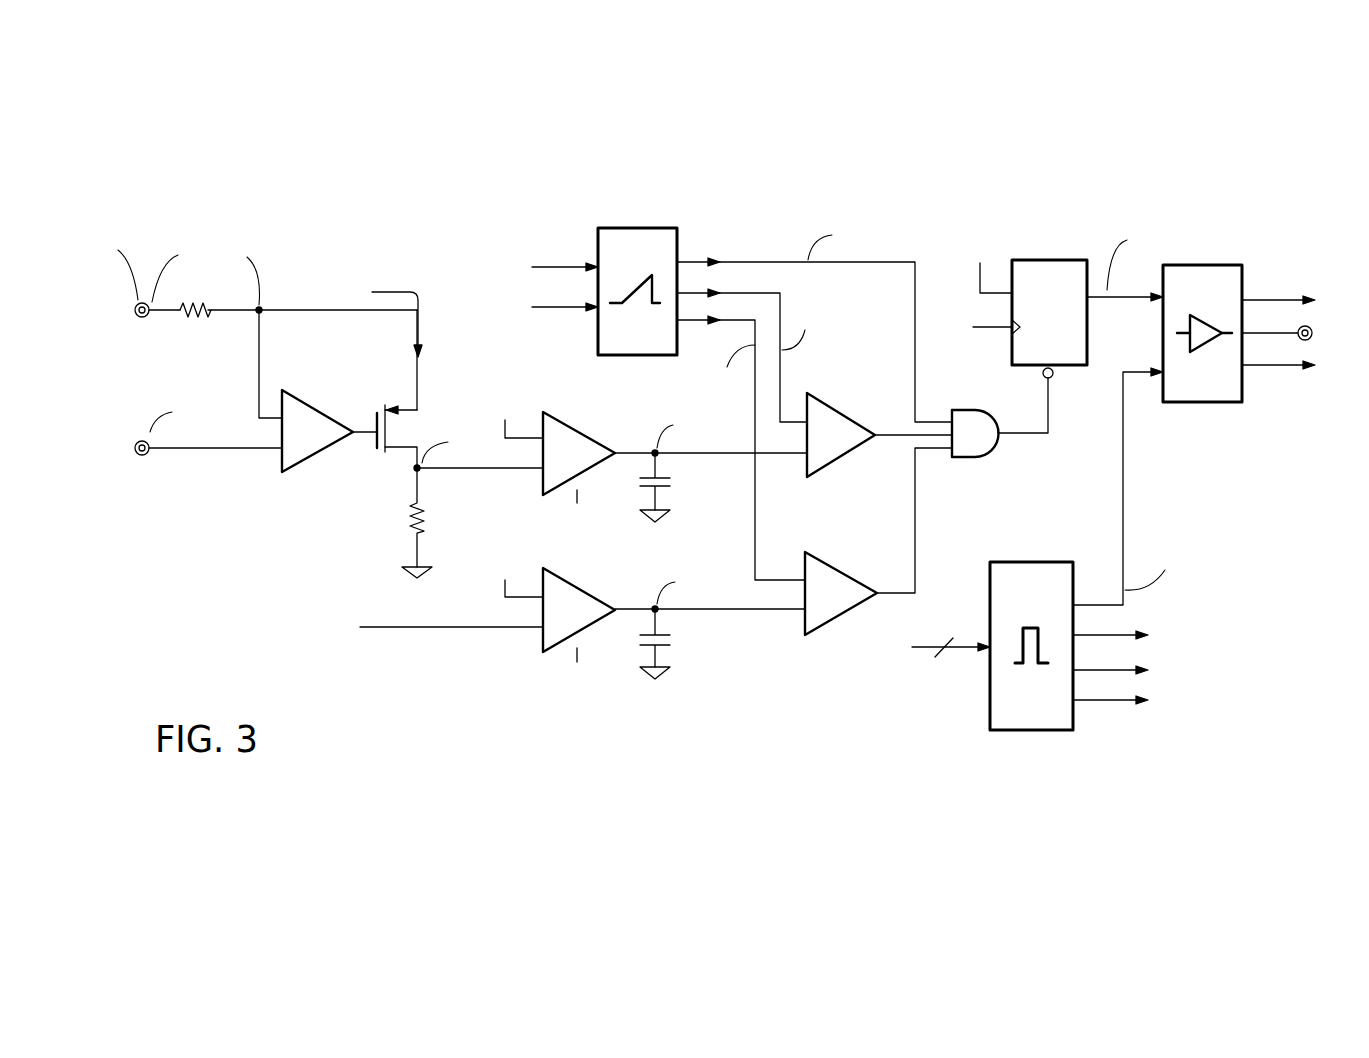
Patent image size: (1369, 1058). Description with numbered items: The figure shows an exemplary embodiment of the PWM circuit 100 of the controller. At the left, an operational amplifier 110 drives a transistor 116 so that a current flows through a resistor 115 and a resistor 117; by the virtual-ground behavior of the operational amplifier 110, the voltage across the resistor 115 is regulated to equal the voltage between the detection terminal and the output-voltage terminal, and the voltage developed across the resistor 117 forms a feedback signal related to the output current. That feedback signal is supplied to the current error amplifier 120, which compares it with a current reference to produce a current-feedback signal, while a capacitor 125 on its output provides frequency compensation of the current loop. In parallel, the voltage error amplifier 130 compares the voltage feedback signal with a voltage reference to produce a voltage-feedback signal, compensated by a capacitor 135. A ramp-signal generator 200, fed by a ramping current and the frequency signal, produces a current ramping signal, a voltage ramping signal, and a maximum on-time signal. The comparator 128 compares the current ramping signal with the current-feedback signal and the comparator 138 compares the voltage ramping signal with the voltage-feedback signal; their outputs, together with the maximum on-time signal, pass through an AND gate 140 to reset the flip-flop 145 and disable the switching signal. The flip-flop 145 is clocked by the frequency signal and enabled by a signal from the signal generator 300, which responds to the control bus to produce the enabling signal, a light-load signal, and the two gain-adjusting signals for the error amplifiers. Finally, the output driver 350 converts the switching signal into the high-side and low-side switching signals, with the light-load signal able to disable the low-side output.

The PWM circuit 100 is at (1226, 183).
The operational amplifier 110 is at (318, 403).
The resistor 115 is at (193, 327).
The transistor 116 is at (383, 457).
The resistor 117 is at (400, 512).
The current error amplifier 120 is at (578, 427).
The capacitor 125 is at (675, 482).
The comparator 128 is at (835, 410).
The voltage error amplifier 130 is at (577, 582).
The capacitor 135 is at (673, 640).
The comparator 138 is at (837, 563).
The AND gate 140 is at (967, 458).
The flip-flop 145 is at (1040, 258).
The ramp-signal generator 200 is at (633, 223).
The signal generator 300 is at (1025, 560).
The output driver 350 is at (1207, 403).